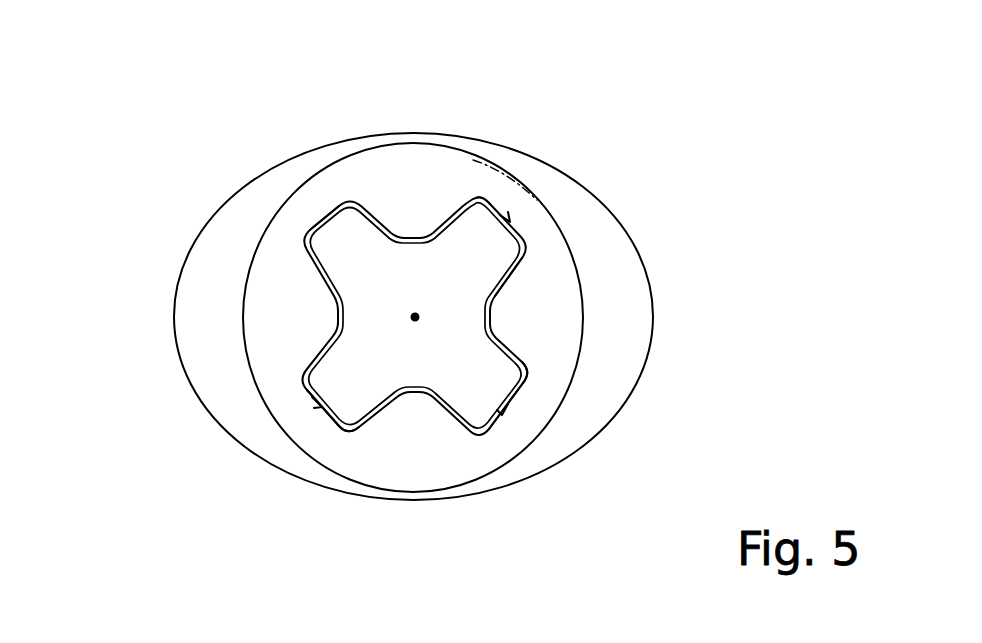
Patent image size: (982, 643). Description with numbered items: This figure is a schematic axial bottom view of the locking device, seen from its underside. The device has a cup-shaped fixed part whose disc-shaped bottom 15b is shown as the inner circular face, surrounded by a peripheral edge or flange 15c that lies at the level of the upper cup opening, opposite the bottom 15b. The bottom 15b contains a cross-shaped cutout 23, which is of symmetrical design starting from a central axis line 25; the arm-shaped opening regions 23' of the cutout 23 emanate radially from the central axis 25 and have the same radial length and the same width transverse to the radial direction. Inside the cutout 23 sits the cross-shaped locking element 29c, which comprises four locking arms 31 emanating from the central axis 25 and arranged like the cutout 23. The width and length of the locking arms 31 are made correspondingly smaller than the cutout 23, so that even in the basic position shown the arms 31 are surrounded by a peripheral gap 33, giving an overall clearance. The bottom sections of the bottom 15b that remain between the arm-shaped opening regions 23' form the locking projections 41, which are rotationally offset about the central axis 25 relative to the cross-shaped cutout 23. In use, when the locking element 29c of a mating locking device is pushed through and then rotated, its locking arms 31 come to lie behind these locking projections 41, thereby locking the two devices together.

The bottom 15b is at (477, 173).
The flange 15c is at (218, 255).
The cross-shaped cutout 23 is at (610, 223).
The arm-shaped opening regions 23' is at (404, 314).
The central axis line 25 is at (415, 320).
The locking element 29c is at (390, 253).
The locking arms 31 is at (337, 237).
The peripheral gap 33 is at (307, 230).
The locking projections 41 is at (327, 315).